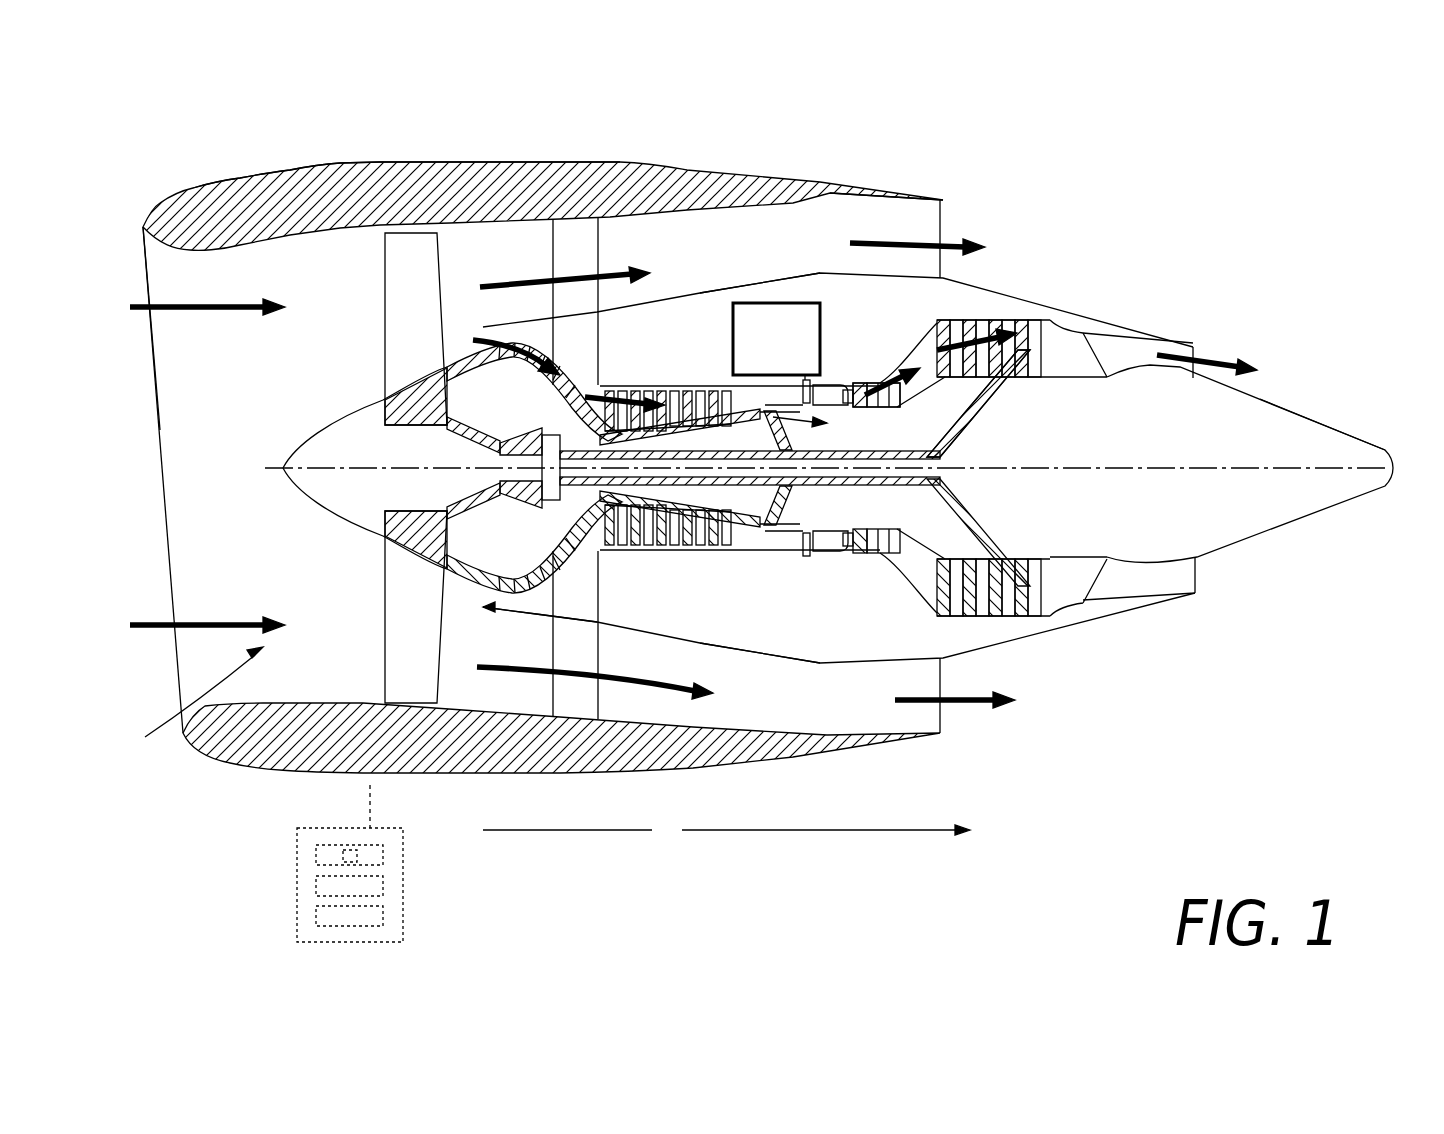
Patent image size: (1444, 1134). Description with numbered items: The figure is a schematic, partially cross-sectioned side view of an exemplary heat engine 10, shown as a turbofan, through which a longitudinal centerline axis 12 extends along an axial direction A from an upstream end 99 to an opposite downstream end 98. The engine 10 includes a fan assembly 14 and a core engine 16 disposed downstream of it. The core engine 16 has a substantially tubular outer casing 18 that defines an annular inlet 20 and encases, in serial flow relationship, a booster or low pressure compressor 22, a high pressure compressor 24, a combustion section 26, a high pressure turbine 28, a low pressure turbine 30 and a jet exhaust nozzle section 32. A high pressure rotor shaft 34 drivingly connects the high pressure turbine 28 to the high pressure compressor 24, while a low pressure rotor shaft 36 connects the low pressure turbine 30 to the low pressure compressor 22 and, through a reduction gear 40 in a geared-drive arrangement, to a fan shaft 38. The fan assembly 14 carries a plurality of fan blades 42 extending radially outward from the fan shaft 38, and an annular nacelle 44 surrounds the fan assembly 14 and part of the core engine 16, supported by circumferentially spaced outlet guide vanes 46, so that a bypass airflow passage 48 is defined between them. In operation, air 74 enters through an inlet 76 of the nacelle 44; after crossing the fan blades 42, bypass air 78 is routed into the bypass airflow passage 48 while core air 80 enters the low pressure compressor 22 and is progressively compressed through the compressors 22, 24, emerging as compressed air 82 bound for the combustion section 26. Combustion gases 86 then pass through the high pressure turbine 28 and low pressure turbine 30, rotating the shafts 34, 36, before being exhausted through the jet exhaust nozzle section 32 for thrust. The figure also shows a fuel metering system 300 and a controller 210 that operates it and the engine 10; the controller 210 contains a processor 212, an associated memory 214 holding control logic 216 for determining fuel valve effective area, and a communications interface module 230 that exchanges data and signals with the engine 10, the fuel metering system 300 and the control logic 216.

The heat engine 10 is at (1100, 185).
The axial centerline axis 12 is at (1127, 468).
The fan assembly 14 is at (474, 232).
The core engine 16 is at (820, 265).
The outer casing 18 is at (775, 648).
The annular inlet 20 is at (483, 587).
The low pressure compressor 22 is at (553, 552).
The high pressure compressor 24 is at (632, 537).
The combustion section 26 is at (827, 537).
The high pressure turbine 28 is at (893, 545).
The low pressure turbine 30 is at (1033, 625).
The jet exhaust nozzle section 32 is at (1105, 595).
The high pressure rotor shaft 34 is at (865, 425).
The low pressure rotor shaft 36 is at (990, 425).
The fan shaft 38 is at (440, 430).
The reduction gear 40 is at (547, 427).
The fan blades 42 is at (402, 272).
The nacelle 44 is at (390, 160).
The outlet guide vanes 46 is at (585, 262).
The bypass airflow passage 48 is at (760, 266).
The air 74 is at (183, 300).
The inlet 76 is at (189, 703).
The bypass air 78 is at (560, 282).
The core air 80 is at (483, 335).
The compressed air 82 is at (612, 385).
The combustion gases 86 is at (868, 378).
The downstream end 98 is at (1347, 427).
The upstream end 99 is at (129, 345).
The controller 210 is at (349, 862).
The processor 212 is at (378, 884).
The memory 214 is at (378, 852).
The control logic 216 is at (343, 858).
The communications interface module 230 is at (378, 914).
The fuel metering system 300 is at (776, 341).
The axial direction A is at (726, 830).